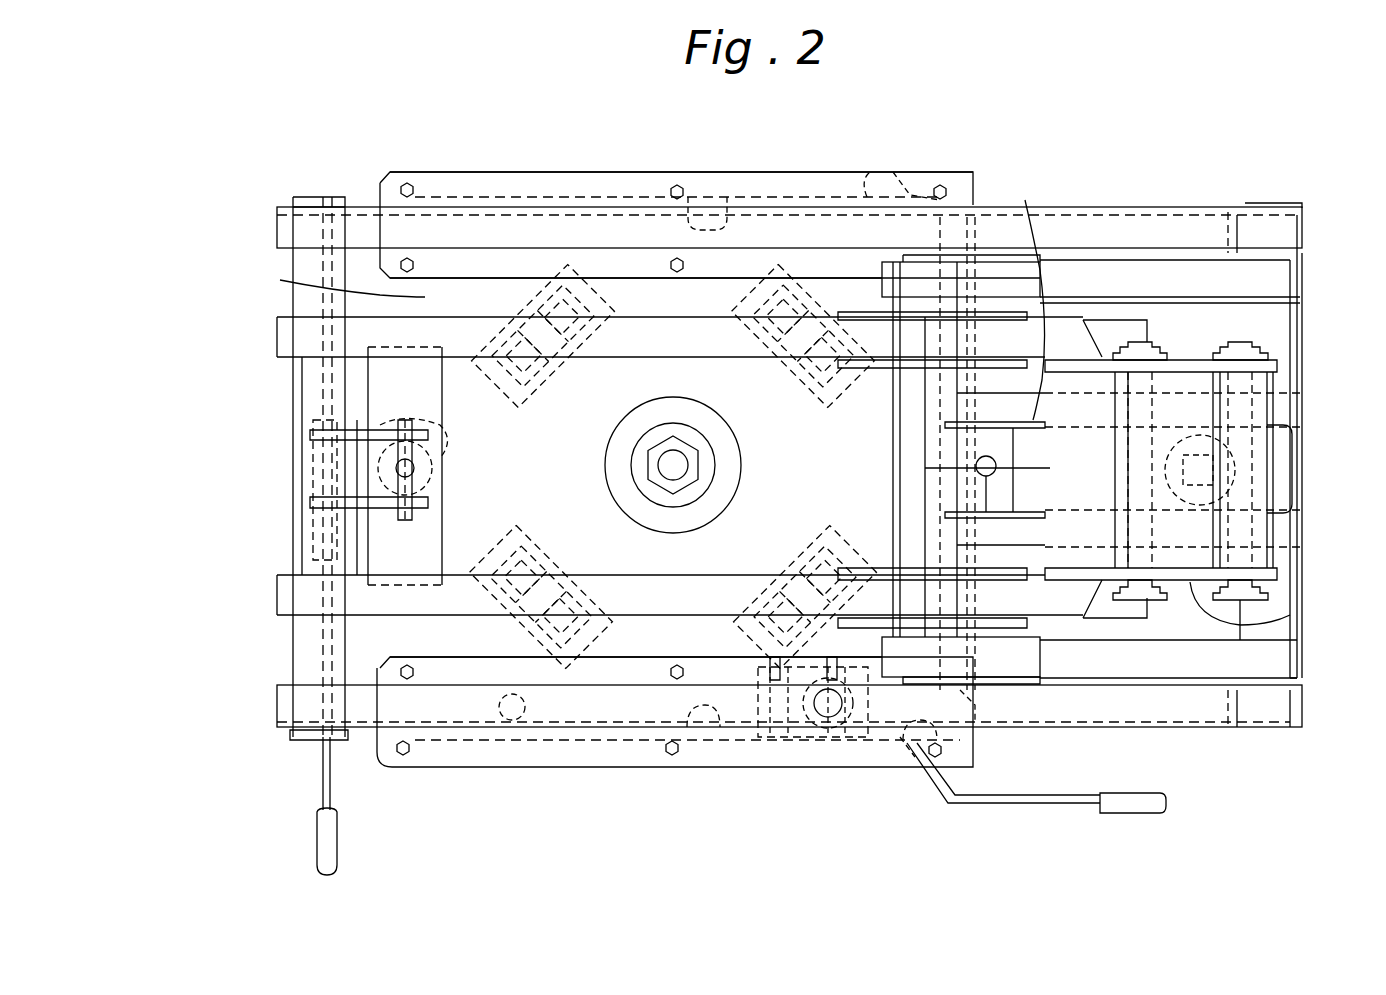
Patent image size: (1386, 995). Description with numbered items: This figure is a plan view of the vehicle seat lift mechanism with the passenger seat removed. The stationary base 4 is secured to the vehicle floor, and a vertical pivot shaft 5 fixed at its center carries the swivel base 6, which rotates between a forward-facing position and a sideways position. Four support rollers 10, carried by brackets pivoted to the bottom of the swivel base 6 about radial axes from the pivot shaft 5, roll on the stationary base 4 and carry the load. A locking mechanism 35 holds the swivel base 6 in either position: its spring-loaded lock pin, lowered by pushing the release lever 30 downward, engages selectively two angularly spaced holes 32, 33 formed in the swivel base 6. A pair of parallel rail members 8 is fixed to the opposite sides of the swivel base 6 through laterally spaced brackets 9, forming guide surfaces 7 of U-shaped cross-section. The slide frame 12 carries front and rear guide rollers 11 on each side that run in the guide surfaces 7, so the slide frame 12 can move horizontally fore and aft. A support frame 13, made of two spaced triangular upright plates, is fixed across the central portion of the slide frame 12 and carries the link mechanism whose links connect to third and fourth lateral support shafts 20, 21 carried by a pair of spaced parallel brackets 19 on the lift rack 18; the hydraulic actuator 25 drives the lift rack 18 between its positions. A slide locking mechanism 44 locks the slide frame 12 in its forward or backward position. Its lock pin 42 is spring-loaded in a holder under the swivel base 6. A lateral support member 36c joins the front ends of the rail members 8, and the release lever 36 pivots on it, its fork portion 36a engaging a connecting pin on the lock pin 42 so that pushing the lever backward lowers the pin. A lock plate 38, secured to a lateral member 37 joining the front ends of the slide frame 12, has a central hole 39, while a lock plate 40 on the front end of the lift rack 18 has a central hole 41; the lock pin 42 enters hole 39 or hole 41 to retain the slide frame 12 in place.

The stationary base 4 is at (478, 190).
The vertical pivot shaft 5 is at (670, 462).
The swivel base 6 is at (380, 295).
The guide surfaces 7 is at (745, 195).
The parallel rail members 8 is at (625, 225).
The brackets 9 is at (555, 193).
The support rollers 10 is at (535, 405).
The guide rollers 11 is at (860, 225).
The slide frame 12 is at (1100, 278).
The support frame 13 is at (1029, 297).
The lift rack 18 is at (307, 333).
The brackets 19 is at (1180, 360).
The third lateral support shaft 20 is at (1140, 342).
The fourth lateral support shaft 21 is at (1305, 455).
The actuator 25 is at (1233, 481).
The release lever 30 is at (1132, 810).
The hole 32 is at (508, 720).
The hole 33 is at (815, 737).
The locking mechanism 35 is at (845, 740).
The release lever 36 is at (317, 855).
The fork portion 36a is at (440, 428).
The lateral support member 36c is at (305, 650).
The lateral member 37 is at (935, 540).
The lock plate 38 is at (985, 437).
The hole 39 is at (1006, 484).
The lock plate 40 is at (415, 380).
The hole 41 is at (422, 475).
The lock pin 42 is at (390, 465).
The slide locking mechanism 44 is at (318, 508).